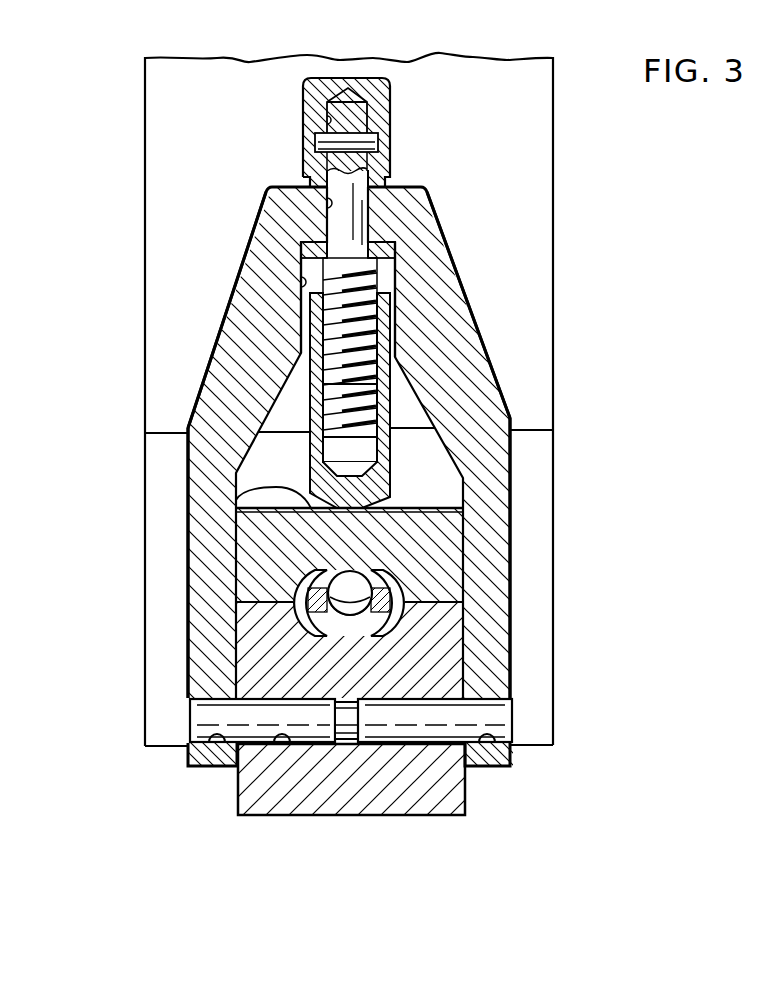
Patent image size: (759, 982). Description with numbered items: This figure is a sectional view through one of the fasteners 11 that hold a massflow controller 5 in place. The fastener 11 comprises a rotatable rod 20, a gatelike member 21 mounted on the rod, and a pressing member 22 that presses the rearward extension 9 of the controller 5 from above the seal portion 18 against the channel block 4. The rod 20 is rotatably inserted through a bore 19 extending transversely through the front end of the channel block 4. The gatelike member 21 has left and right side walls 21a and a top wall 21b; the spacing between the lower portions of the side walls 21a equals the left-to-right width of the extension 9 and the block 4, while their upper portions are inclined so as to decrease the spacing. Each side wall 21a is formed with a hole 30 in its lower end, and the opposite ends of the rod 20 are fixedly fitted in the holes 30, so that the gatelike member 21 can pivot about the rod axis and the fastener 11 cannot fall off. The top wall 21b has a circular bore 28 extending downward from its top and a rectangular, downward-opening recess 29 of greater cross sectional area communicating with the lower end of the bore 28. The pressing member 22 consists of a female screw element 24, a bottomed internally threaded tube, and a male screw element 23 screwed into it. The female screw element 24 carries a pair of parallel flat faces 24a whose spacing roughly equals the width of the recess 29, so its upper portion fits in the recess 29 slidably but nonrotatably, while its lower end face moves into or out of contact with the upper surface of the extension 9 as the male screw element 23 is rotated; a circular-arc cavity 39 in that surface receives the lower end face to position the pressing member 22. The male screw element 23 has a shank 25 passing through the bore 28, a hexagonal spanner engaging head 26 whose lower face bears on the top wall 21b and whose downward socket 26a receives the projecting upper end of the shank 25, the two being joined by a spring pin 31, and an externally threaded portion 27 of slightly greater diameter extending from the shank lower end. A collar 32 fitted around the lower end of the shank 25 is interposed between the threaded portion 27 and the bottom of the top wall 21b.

The channel block 4 is at (300, 787).
The massflow controller 5 is at (535, 112).
The rearward extension 9 is at (257, 545).
The fastener 11 is at (510, 408).
The seal portion 18 is at (357, 613).
The bore 19 is at (282, 740).
The rotatable rod 20 is at (408, 727).
The gatelike member 21 is at (497, 517).
The side walls 21a is at (203, 627).
The top wall 21b is at (413, 208).
The pressing member 22 is at (382, 330).
The male screw element 23 is at (378, 270).
The female screw element 24 is at (383, 470).
The flat faces 24a is at (268, 407).
The shank 25 is at (353, 212).
The spanner engaging head 26 is at (380, 104).
The socket 26a is at (328, 121).
The externally threaded portion 27 is at (398, 357).
The bore 28 is at (330, 203).
The recess 29 is at (305, 282).
The hole 30 is at (217, 742).
The spring pin 31 is at (318, 143).
The collar 32 is at (305, 250).
The cavity 39 is at (253, 500).